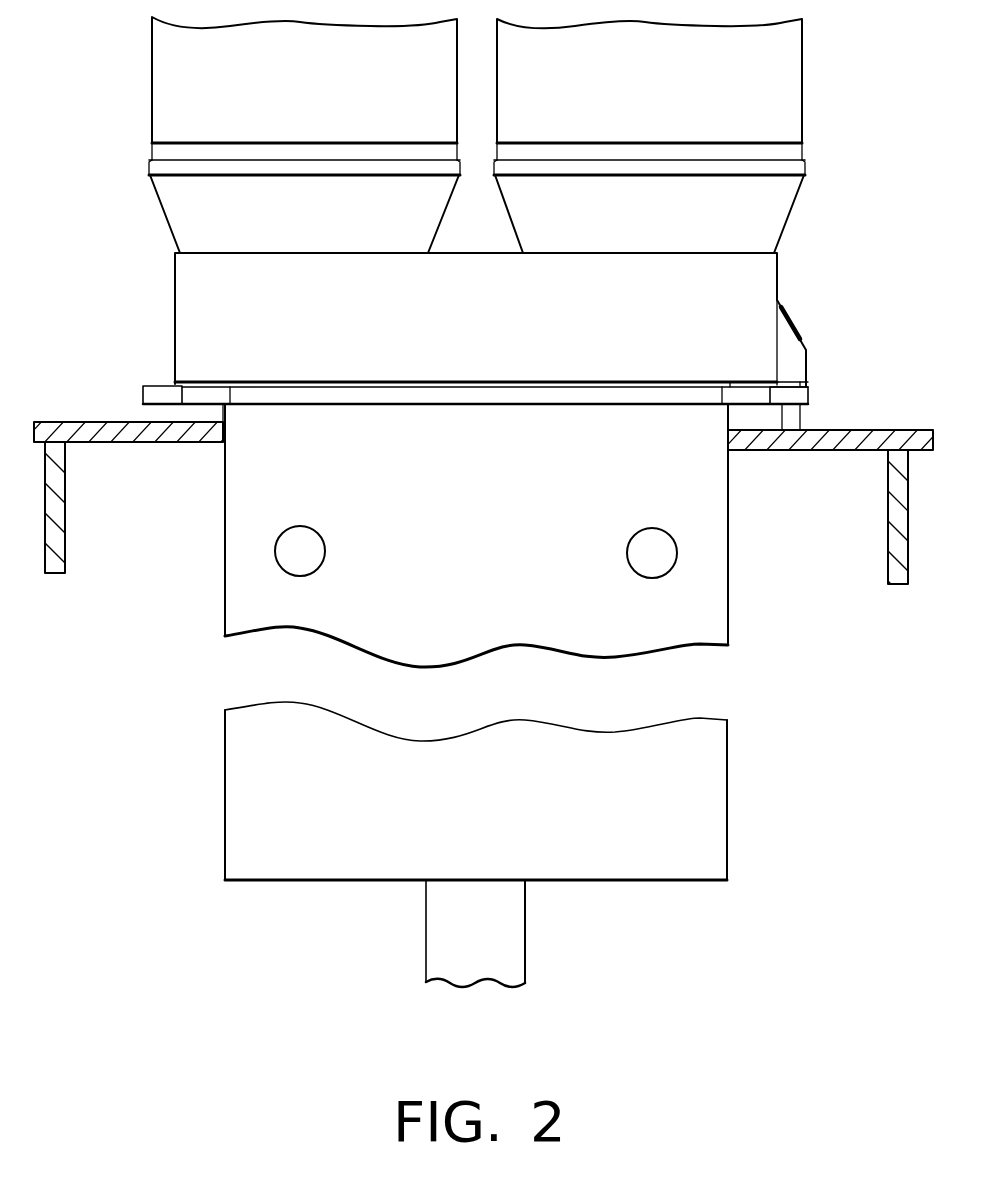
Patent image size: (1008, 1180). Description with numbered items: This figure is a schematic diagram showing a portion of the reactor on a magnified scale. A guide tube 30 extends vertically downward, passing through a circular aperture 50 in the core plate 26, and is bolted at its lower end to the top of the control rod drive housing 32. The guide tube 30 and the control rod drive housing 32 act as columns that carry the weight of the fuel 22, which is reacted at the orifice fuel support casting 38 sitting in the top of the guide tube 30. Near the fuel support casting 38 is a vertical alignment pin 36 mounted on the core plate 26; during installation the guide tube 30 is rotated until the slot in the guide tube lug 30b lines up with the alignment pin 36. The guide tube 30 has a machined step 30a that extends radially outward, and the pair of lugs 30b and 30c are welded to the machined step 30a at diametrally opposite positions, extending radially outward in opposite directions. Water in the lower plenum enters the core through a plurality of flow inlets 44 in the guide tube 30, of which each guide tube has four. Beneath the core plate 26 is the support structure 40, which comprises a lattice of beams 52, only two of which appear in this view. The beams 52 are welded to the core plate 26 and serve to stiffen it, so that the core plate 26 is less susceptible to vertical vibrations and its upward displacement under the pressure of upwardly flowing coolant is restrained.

The fuel 22 is at (331, 107).
The core plate 26 is at (858, 438).
The guide tube 30 is at (710, 612).
The machined step 30a is at (388, 396).
The guide tube lug 30b is at (163, 393).
The guide tube lug 30c is at (812, 400).
The control rod drive housing 32 is at (528, 942).
The vertical alignment pin 36 is at (800, 333).
The orifice fuel support casting 38 is at (760, 283).
The support structure 40 is at (481, 495).
The flow inlets 44 is at (310, 559).
The circular aperture 50 is at (226, 433).
The beams 52 is at (57, 510).